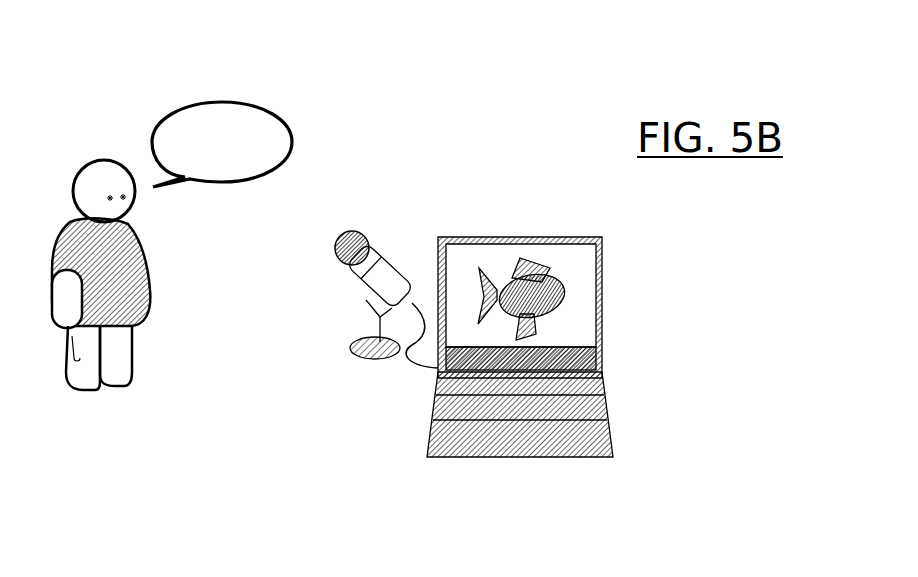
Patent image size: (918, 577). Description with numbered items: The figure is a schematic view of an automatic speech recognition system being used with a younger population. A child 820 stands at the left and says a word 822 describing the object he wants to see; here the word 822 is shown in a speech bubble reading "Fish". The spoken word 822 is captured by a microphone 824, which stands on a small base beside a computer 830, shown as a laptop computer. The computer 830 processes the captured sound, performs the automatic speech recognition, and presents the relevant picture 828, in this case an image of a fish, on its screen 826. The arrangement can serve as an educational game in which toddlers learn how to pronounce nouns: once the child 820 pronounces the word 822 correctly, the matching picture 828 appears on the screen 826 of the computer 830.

The child 820 is at (100, 165).
The word 822 is at (160, 118).
The microphone 824 is at (348, 272).
The screen 826 is at (588, 254).
The relevant picture 828 is at (520, 265).
The computer 830 is at (582, 448).